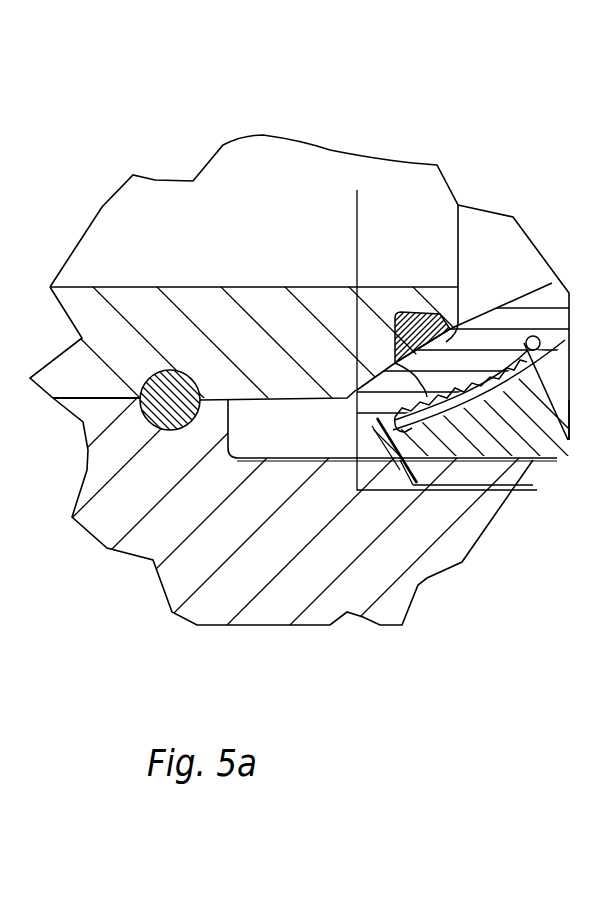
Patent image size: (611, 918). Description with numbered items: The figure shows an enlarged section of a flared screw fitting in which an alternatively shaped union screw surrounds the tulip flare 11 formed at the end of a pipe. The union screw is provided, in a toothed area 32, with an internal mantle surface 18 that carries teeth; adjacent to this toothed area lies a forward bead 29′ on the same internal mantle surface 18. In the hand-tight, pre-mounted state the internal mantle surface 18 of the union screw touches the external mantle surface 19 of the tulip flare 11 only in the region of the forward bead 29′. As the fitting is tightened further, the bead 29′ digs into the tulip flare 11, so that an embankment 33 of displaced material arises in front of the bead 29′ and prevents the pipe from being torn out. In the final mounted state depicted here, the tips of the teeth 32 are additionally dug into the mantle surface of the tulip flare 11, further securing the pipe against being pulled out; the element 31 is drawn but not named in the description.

The teeth / toothed area 32 is at (393, 360).
The tulip flare 11 is at (500, 275).
The external mantle surface 19 is at (572, 348).
The embankment 33 is at (378, 412).
The forward bead 29′ is at (400, 430).
The holding strip 31 is at (496, 436).
The internal mantle surface 18 is at (560, 343).